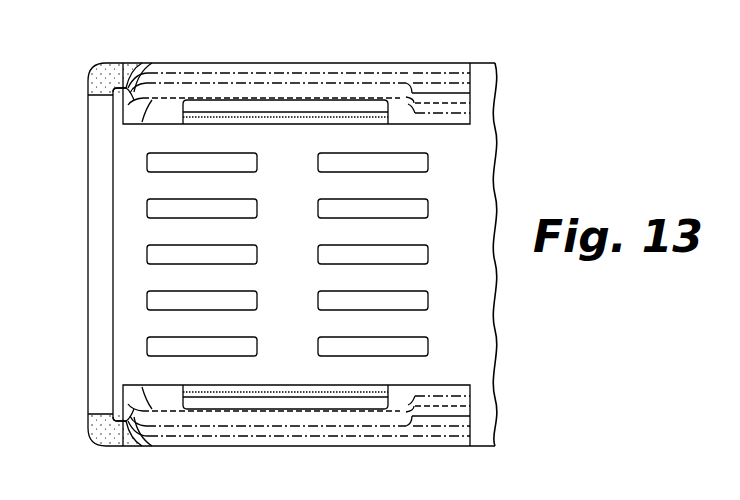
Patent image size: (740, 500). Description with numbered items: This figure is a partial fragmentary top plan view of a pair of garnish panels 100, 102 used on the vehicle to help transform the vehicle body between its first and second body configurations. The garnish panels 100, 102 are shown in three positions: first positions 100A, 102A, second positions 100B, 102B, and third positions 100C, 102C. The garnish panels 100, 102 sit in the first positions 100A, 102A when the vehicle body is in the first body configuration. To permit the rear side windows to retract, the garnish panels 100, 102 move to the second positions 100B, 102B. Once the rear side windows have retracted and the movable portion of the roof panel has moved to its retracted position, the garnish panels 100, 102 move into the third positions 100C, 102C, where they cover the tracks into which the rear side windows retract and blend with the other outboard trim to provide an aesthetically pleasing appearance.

The garnish panel 100 is at (436, 60).
The first position 100A is at (136, 104).
The second position 100B is at (152, 97).
The third position 100C is at (268, 62).
The garnish panel 102 is at (436, 450).
The first position 102A is at (136, 405).
The second position 102B is at (152, 412).
The third position 102C is at (314, 448).